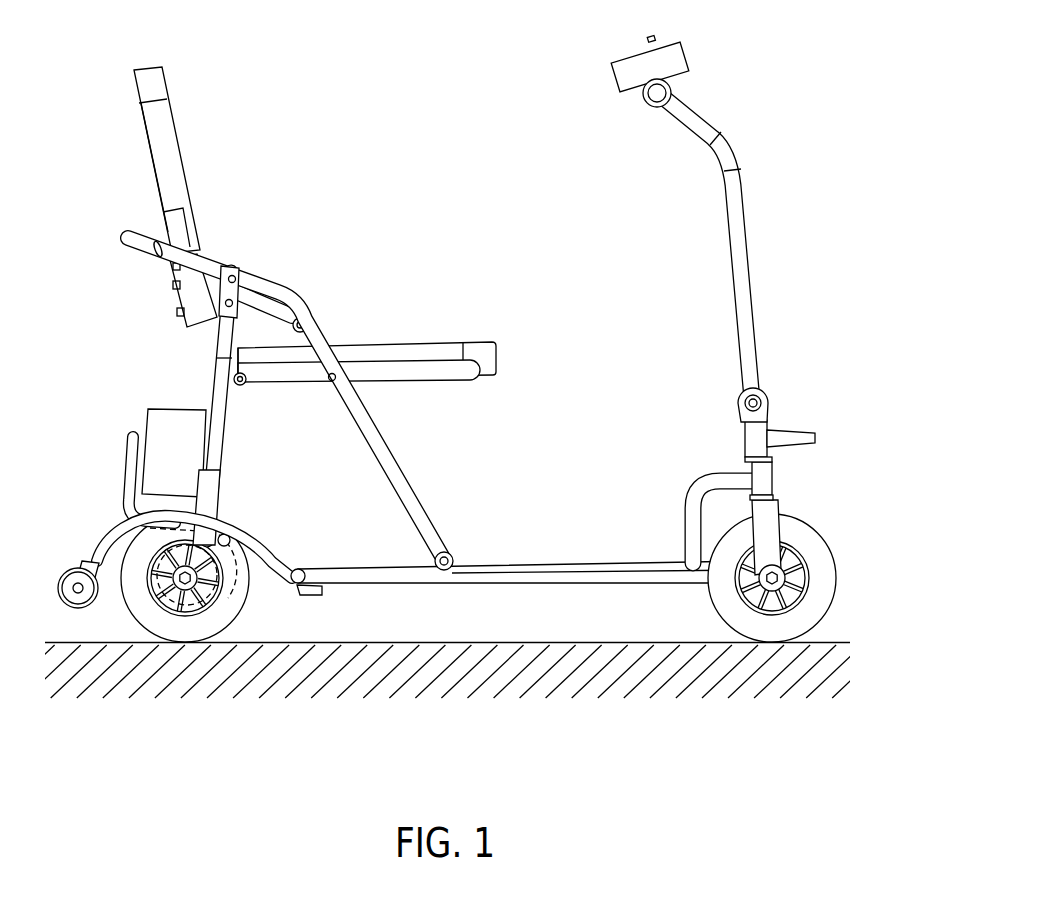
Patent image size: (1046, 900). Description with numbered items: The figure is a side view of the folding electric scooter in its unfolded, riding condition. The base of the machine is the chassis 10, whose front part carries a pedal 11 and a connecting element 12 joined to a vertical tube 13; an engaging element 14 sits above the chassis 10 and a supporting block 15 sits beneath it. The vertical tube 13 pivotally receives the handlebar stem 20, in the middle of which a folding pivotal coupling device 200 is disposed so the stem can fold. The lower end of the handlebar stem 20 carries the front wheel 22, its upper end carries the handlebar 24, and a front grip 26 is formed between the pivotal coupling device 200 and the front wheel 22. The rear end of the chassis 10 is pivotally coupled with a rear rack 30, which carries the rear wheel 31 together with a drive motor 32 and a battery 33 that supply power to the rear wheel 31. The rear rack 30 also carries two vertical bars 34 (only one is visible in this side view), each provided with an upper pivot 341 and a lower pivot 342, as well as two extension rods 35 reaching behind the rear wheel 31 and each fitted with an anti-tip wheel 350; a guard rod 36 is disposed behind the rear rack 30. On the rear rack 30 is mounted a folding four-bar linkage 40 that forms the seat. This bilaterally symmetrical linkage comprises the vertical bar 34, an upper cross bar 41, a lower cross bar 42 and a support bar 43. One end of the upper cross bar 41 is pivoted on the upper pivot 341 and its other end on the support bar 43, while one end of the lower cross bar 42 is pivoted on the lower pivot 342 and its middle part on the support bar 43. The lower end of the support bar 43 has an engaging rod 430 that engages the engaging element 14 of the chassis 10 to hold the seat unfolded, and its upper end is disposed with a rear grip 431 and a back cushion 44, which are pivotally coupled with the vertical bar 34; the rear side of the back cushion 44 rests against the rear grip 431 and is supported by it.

The chassis 10 is at (537, 577).
The pedal 11 is at (563, 570).
The connecting element 12 is at (715, 487).
The vertical tube 13 is at (766, 487).
The engaging element 14 is at (446, 548).
The supporting block 15 is at (310, 595).
The handlebar stem 20 is at (725, 225).
The pivotal coupling device 200 is at (760, 396).
The front wheel 22 is at (760, 620).
The handlebar 24 is at (672, 92).
The front grip 26 is at (794, 430).
The rear rack 30 is at (140, 515).
The rear wheel 31 is at (195, 627).
The drive motor 32 is at (150, 528).
The battery 33 is at (177, 423).
The vertical bar 34 is at (183, 406).
The upper pivot 341 is at (222, 306).
The lower pivot 342 is at (244, 384).
The extension rod 35 is at (89, 626).
The anti-tip wheel 350 is at (83, 607).
The guard rod 36 is at (135, 437).
The four-bar linkage 40 is at (274, 308).
The upper cross bar 41 is at (257, 307).
The lower cross bar 42 is at (294, 378).
The support bar 43 is at (251, 356).
The engaging rod 430 is at (443, 568).
The rear grip 431 is at (147, 235).
The back cushion 44 is at (163, 147).